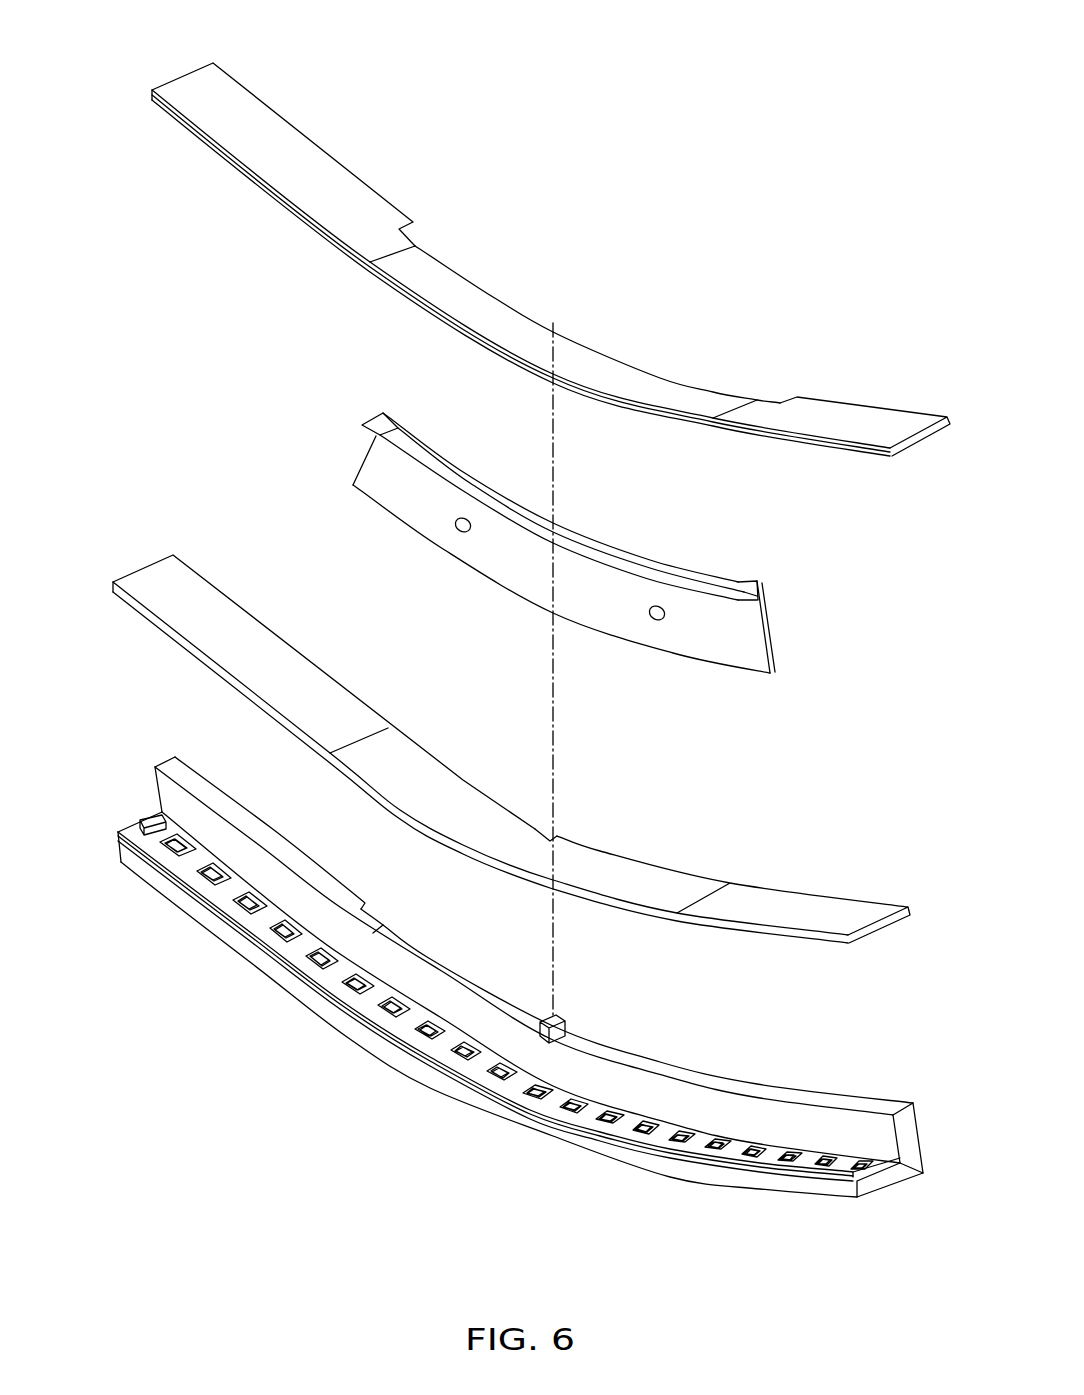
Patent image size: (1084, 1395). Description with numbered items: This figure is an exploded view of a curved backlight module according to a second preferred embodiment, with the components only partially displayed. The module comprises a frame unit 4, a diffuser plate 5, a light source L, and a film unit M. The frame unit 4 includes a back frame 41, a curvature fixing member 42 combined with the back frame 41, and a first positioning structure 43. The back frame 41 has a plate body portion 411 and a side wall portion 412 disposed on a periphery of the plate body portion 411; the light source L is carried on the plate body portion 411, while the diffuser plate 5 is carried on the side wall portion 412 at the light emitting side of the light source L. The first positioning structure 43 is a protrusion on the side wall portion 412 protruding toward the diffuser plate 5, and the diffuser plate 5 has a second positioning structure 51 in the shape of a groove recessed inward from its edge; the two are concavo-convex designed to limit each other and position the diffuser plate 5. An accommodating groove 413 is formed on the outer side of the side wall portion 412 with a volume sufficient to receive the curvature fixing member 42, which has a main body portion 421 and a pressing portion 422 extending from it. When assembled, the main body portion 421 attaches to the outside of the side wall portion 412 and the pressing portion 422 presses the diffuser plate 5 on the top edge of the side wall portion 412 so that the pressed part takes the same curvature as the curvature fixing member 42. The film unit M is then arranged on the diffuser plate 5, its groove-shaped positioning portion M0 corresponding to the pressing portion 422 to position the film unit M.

The film unit M is at (525, 228).
The positioning portion M0 is at (593, 351).
The curvature fixing member 42 is at (562, 516).
The main body portion 421 is at (753, 635).
The pressing portion 422 is at (665, 573).
The diffuser plate 5 is at (486, 711).
The second positioning structure 51 is at (553, 840).
The frame unit 4 is at (497, 1054).
The back frame 41 is at (532, 1059).
The plate body portion 411 is at (873, 1188).
The side wall portion 412 is at (551, 1027).
The accommodating groove 413 is at (421, 955).
The first positioning structure 43 is at (557, 1025).
The light source L is at (128, 825).